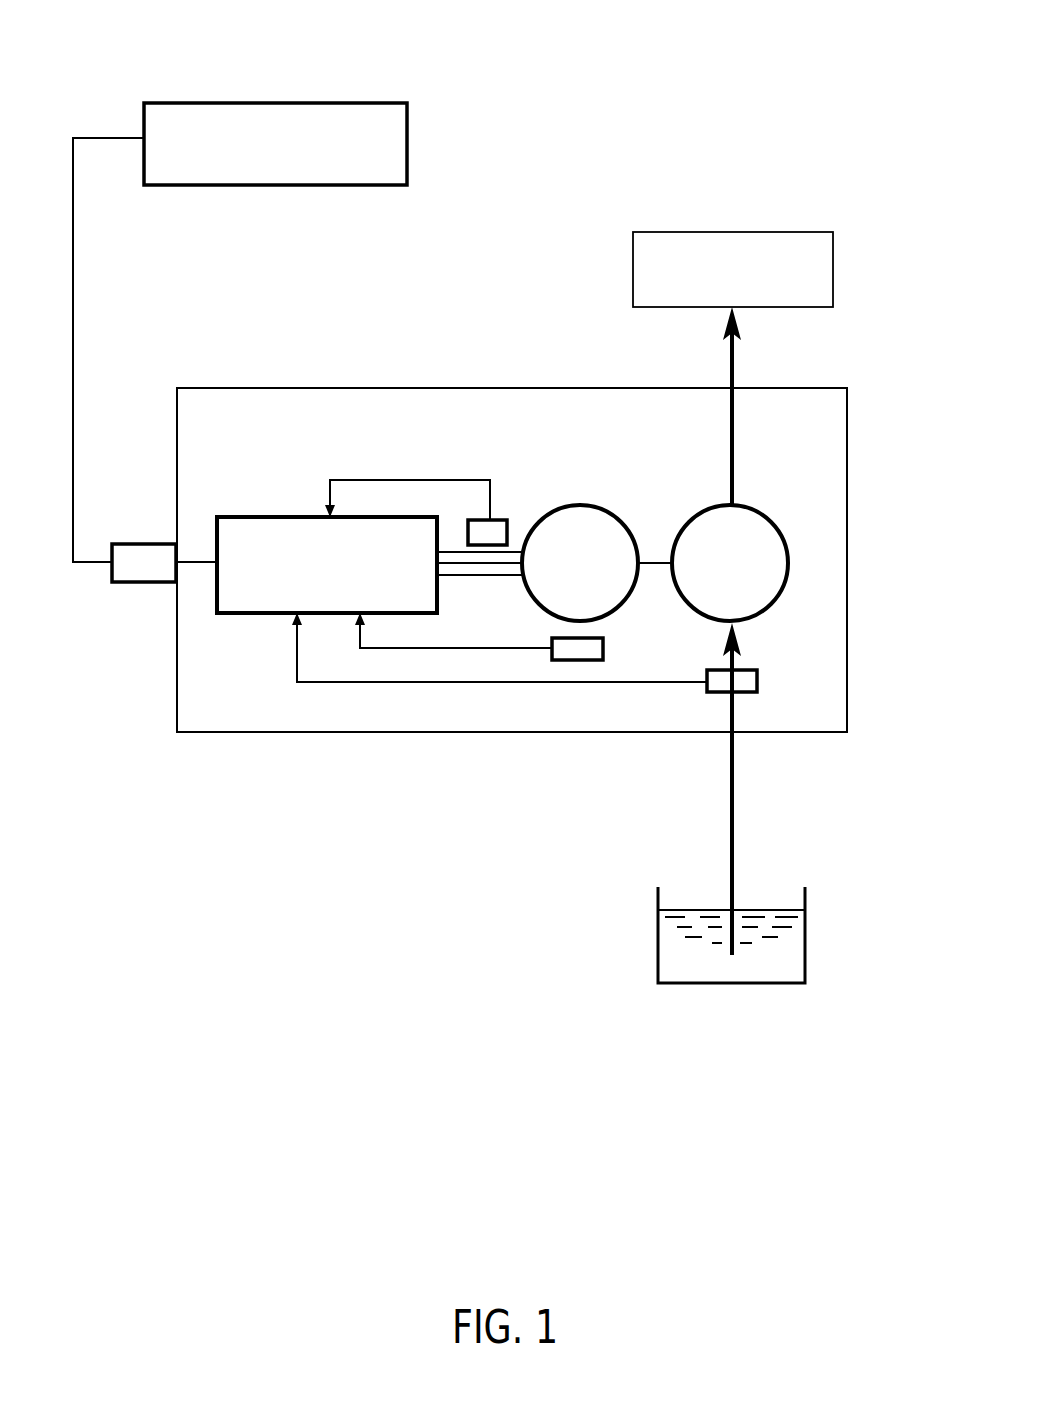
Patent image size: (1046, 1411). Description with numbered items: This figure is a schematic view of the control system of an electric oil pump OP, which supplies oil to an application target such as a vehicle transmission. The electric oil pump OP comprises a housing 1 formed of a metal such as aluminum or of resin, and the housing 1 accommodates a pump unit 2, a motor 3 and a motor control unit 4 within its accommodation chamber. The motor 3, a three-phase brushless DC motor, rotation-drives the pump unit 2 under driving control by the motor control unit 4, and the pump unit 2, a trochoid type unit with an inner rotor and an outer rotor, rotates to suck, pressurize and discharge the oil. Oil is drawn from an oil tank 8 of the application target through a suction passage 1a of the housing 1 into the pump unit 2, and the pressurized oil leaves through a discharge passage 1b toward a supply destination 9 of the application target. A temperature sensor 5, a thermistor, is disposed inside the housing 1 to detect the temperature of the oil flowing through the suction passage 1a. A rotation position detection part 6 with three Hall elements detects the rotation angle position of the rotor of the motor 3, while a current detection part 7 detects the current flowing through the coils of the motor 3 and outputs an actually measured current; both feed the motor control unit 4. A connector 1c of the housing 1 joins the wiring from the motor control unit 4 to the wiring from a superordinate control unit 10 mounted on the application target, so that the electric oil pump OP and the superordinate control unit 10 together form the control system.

The housing 1 is at (815, 385).
The suction passage 1a is at (733, 658).
The discharge passage 1b is at (733, 455).
The connector 1c is at (127, 584).
The pump unit 2 is at (794, 553).
The motor 3 is at (605, 508).
The motor control unit 4 is at (280, 509).
The temperature sensor 5 is at (762, 685).
The rotation position detection part 6 is at (610, 648).
The current detection part 7 is at (503, 518).
The oil tank 8 is at (812, 934).
The supply destination 9 is at (800, 228).
The superordinate control unit 10 is at (364, 98).
The electric oil pump OP is at (489, 383).